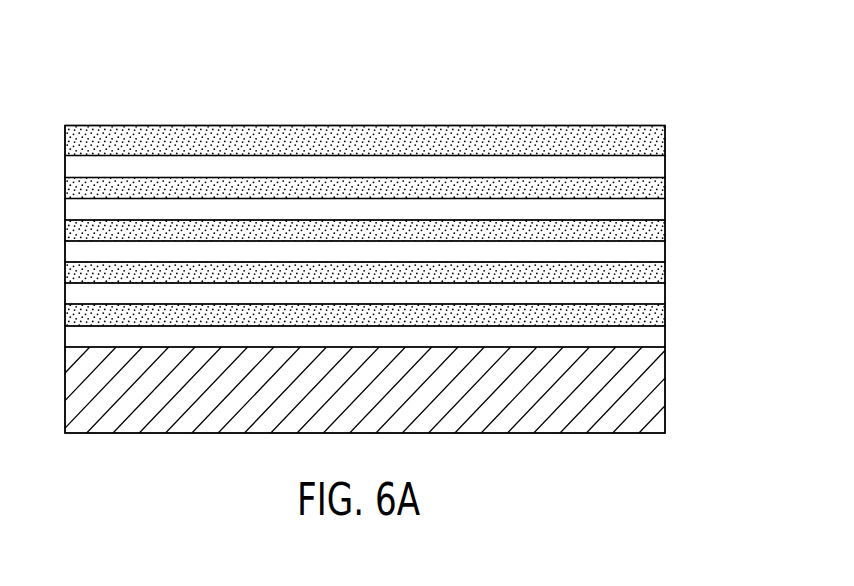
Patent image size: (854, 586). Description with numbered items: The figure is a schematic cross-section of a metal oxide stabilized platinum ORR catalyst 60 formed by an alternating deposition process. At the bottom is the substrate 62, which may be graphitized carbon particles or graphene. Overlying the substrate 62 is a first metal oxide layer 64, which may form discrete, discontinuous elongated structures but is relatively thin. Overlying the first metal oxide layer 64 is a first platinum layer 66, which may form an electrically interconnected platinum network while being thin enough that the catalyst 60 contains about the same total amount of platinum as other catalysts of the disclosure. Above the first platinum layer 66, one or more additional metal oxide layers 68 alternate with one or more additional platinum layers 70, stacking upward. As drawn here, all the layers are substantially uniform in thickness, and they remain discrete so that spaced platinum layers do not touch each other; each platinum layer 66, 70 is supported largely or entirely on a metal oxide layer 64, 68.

The metal oxide stabilized platinum ORR catalyst 60 is at (571, 79).
The substrate 62 is at (657, 398).
The first metal oxide layer 64 is at (657, 342).
The first platinum layer 66 is at (660, 318).
The additional metal oxide layers 68 is at (658, 168).
The additional platinum layers 70 is at (78, 145).